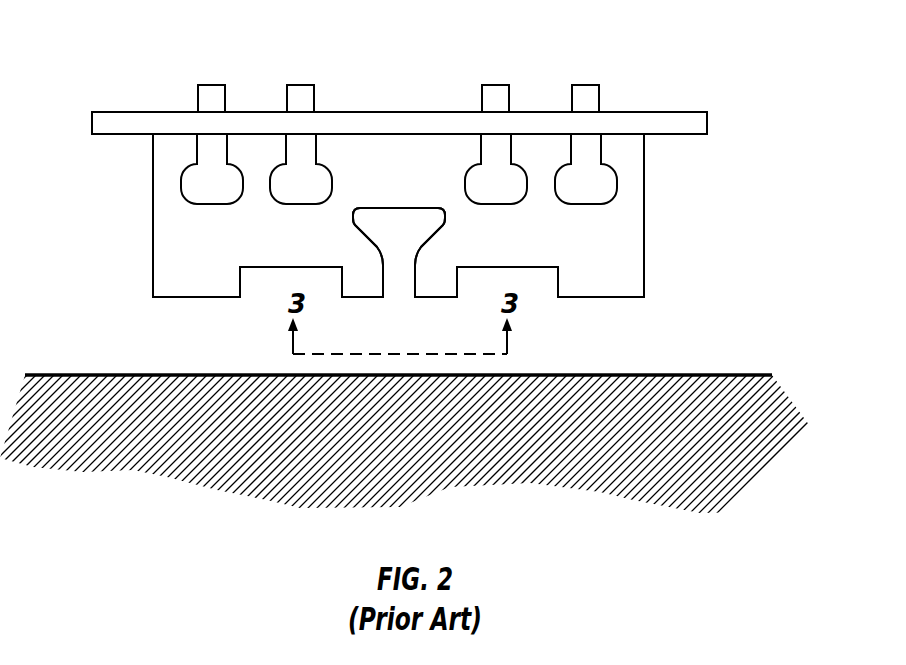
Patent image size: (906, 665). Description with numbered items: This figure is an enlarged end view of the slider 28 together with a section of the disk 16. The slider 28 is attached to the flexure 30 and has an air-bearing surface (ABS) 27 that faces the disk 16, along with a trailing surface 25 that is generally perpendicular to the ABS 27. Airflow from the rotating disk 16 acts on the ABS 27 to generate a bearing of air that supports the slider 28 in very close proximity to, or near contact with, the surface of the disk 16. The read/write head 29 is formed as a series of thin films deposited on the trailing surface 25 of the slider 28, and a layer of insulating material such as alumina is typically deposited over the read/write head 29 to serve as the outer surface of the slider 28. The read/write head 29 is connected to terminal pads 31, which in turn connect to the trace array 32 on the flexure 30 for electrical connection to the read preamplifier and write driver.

The disk 16 is at (780, 408).
The trailing surface 25 is at (632, 253).
The air-bearing surface 27 is at (175, 297).
The slider 28 is at (645, 197).
The read/write head 29 is at (398, 208).
The flexure 30 is at (707, 117).
The terminal pads 31 is at (287, 205).
The trace array 32 is at (600, 72).